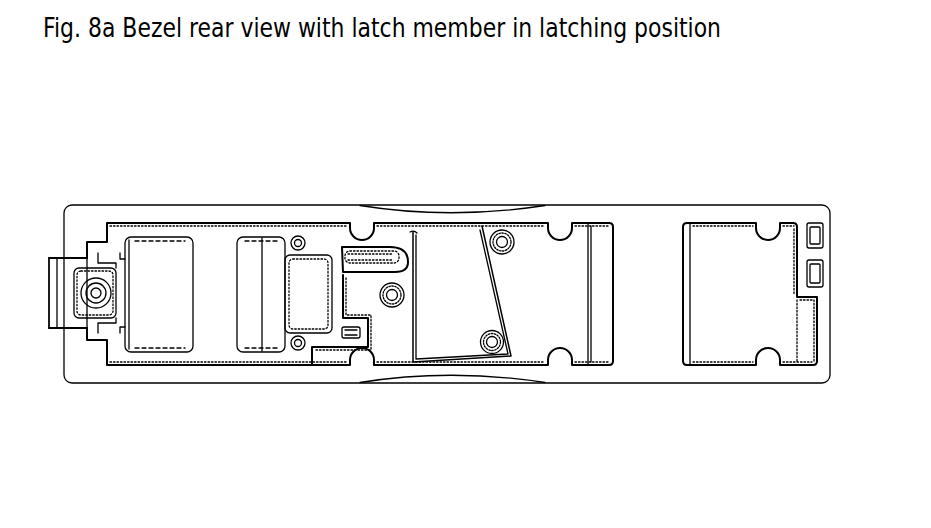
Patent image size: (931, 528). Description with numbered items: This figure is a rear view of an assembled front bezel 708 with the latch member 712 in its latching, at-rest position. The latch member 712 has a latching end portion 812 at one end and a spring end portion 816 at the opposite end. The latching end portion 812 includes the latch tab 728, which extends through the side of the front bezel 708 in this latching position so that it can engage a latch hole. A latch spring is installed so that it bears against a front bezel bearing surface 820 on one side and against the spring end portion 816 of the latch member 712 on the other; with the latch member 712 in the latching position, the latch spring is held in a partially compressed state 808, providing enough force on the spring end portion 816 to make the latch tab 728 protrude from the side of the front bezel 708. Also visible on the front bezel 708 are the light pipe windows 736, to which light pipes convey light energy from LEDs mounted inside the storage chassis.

The front bezel 708 is at (761, 222).
The latch member 712 is at (164, 272).
The latch tab 728 is at (57, 328).
The light pipe windows 736 is at (813, 222).
The partially compressed state 808 is at (456, 362).
The latching end portion 812 is at (57, 258).
The spring end portion 816 is at (364, 250).
The front bezel bearing surface 820 is at (503, 226).